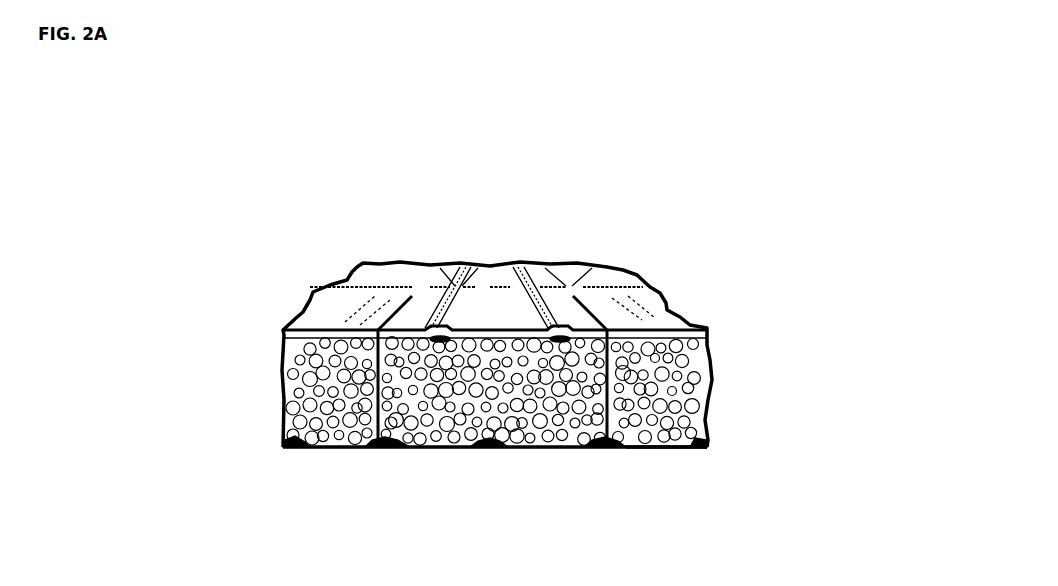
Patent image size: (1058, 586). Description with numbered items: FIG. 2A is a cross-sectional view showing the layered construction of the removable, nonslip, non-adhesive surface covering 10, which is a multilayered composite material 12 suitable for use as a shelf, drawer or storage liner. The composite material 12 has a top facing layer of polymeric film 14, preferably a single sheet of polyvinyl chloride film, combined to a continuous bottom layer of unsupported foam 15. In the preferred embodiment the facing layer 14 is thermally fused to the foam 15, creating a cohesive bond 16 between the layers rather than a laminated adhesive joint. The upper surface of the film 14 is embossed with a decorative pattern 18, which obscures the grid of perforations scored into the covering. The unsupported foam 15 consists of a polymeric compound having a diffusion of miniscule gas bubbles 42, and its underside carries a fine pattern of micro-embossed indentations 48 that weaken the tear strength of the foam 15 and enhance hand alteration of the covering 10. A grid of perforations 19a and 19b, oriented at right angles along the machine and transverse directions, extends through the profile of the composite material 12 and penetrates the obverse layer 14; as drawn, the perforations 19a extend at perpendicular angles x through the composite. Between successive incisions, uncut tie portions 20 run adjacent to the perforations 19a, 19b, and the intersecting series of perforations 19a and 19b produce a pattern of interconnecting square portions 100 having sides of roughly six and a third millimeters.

The surface covering 10 is at (649, 198).
The multilayered composite material 12 is at (478, 416).
The top facing layer of polymeric film 14 is at (707, 333).
The unsupported foam layer 15 is at (520, 464).
The cohesive bond 16 is at (707, 357).
The embossed decorative pattern 18 is at (460, 263).
The perforations 19a is at (543, 263).
The perforations 19b is at (347, 280).
The uncut tie portions 20 is at (393, 262).
The miniscule gas bubbles 42 is at (660, 450).
The micro-embossed indentations 48 is at (493, 450).
The interconnecting square portions 100 is at (512, 319).
The perpendicular angle x is at (377, 449).